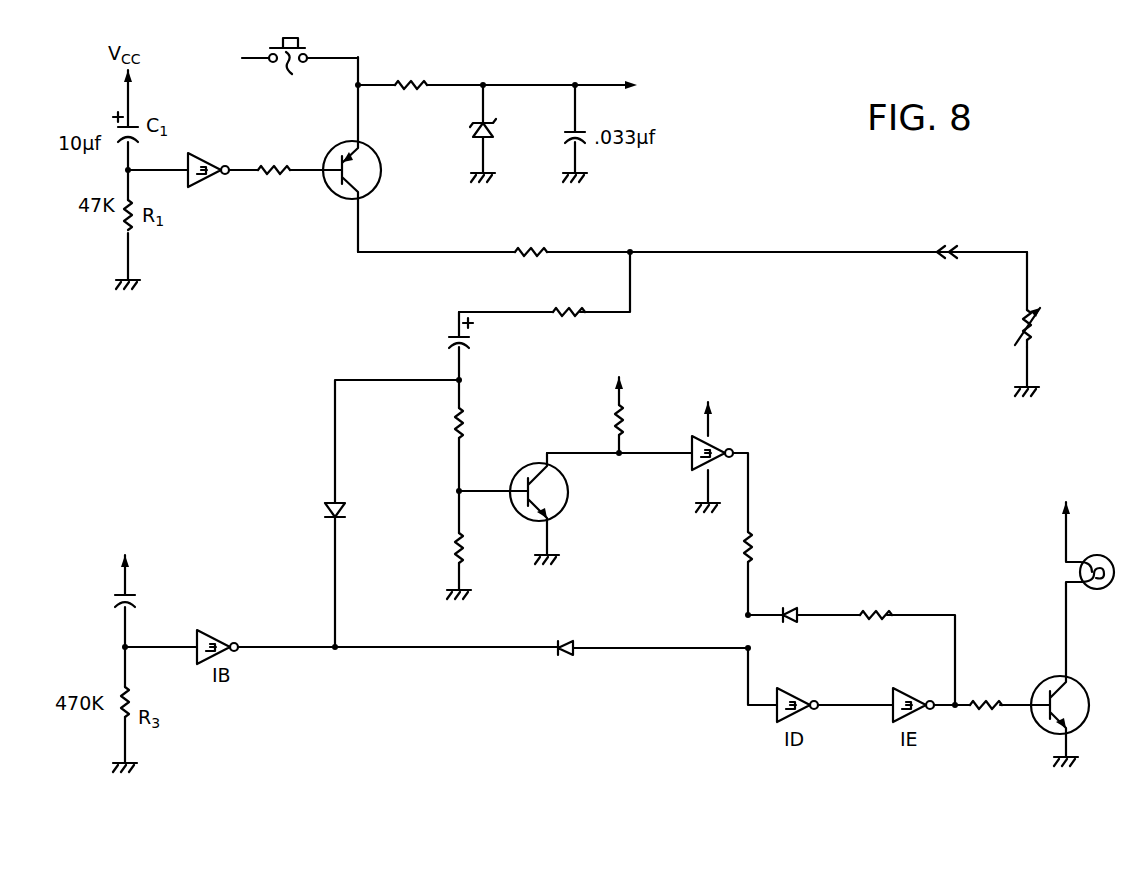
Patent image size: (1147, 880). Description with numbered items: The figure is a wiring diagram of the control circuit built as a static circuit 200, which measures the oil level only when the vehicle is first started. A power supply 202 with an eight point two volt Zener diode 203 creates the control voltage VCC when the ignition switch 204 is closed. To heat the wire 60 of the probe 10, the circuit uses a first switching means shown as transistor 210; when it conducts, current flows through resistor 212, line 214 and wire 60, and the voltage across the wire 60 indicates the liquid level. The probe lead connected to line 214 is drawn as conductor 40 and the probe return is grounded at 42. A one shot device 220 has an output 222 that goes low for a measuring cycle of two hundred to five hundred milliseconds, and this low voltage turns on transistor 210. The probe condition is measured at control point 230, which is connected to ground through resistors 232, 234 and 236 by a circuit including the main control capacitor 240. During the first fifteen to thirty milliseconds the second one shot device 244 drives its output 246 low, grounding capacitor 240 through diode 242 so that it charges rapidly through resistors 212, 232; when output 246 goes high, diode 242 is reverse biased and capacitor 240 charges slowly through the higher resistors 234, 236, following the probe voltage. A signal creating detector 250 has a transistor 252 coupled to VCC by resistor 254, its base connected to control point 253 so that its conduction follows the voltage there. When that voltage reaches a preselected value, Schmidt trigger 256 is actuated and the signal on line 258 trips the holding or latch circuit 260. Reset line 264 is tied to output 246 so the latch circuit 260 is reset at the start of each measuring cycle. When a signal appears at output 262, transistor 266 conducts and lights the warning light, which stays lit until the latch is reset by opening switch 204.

The probe 10 is at (1012, 345).
The probe conductor 40 is at (993, 252).
The ground connection 42 is at (1032, 372).
The wire 60 is at (1020, 318).
The static circuit 200 is at (778, 150).
The power supply 202 is at (537, 74).
The Zener diode 203 is at (490, 131).
The ignition switch 204 is at (268, 70).
The transistor 210 is at (346, 200).
The resistor 212 is at (536, 258).
The line 214 is at (812, 252).
The one shot device 220 is at (186, 190).
The output 222 is at (246, 172).
The control point 230 is at (632, 250).
The resistor 232 is at (578, 318).
The resistor 234 is at (455, 437).
The resistor 236 is at (465, 548).
The main control capacitor 240 is at (470, 356).
The diode 242 is at (352, 514).
The second one shot device 244 is at (188, 588).
The output 246 is at (300, 652).
The signal creating detector 250 is at (683, 366).
The transistor 252 is at (556, 513).
The control point 253 is at (463, 488).
The resistor 254 is at (626, 420).
The Schmidt trigger 256 is at (710, 444).
The line 258 is at (750, 498).
The holding or latch circuit 260 is at (920, 604).
The output 262 is at (1012, 708).
The reset line 264 is at (698, 654).
The transistor 266 is at (1076, 690).